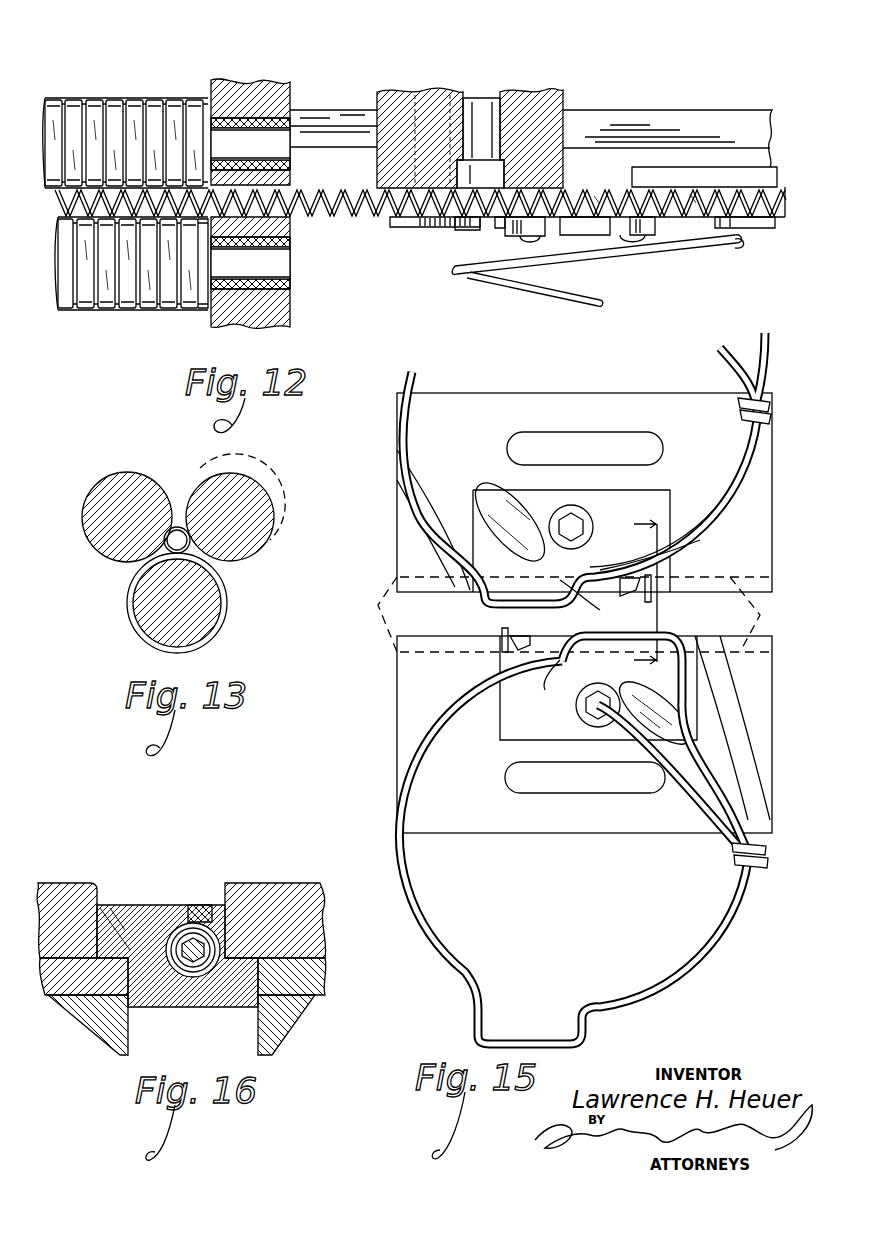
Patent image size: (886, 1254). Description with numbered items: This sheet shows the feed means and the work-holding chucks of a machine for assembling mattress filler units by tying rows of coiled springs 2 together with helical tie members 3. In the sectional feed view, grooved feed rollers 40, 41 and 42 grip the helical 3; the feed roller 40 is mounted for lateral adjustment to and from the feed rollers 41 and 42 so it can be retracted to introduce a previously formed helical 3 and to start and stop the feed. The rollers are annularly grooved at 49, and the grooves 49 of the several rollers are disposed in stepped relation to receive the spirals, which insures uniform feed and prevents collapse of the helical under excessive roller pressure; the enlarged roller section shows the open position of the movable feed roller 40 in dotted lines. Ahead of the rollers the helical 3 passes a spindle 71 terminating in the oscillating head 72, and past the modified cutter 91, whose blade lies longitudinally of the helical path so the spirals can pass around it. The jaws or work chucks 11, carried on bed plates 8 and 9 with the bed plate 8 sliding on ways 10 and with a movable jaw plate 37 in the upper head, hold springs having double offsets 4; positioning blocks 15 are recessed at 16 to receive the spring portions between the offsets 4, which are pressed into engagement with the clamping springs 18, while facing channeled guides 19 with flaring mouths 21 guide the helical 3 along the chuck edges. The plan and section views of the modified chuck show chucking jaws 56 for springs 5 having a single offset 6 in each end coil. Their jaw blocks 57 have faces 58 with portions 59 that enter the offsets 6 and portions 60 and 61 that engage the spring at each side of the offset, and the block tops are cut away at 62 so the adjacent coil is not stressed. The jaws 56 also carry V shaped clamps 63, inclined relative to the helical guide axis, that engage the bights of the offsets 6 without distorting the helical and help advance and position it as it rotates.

In FIG. 12, the coiled springs 2 is at (666, 252).
In FIG. 12, the helical tie member 3 is at (320, 190).
In FIG. 13, the helical tie member 3 is at (177, 530).
In FIG. 16, the helical tie member 3 is at (205, 925).
In FIG. 12, the double offsets 4 is at (597, 196).
In FIG. 15, the springs 5 is at (710, 522).
In FIG. 15, the offset 6 is at (493, 598).
In FIG. 16, the offset 6 is at (208, 962).
In FIG. 16, the bed plate 8 is at (292, 1020).
In FIG. 16, the bed plate 9 is at (105, 1020).
In FIG. 12, the ways 10 is at (115, 100).
In FIG. 12, the jaws or work chucks 11 is at (772, 180).
In FIG. 12, the positioning blocks 15 is at (520, 236).
In FIG. 12, the recess 16 is at (617, 222).
In FIG. 15, the recess 16 is at (631, 593).
In FIG. 12, the clamping springs 18 is at (578, 225).
In FIG. 12, the channeled guides 19 is at (463, 222).
In FIG. 15, the channeled guides 19 is at (758, 614).
In FIG. 15, the flaring mouths 21 is at (372, 614).
In FIG. 12, the movable jaw plate 37 is at (743, 122).
In FIG. 13, the feed roller 40 is at (258, 492).
In FIG. 12, the feed roller 41 is at (153, 105).
In FIG. 13, the feed roller 41 is at (121, 481).
In FIG. 12, the feed roller 42 is at (160, 303).
In FIG. 13, the feed roller 42 is at (142, 614).
In FIG. 12, the annular grooves 49 is at (184, 108).
In FIG. 13, the annular grooves 49 is at (226, 622).
In FIG. 15, the chucking jaws 56 is at (470, 400).
In FIG. 16, the chucking jaws 56 is at (50, 976).
In FIG. 15, the jaw blocks 57 is at (525, 492).
In FIG. 16, the jaw blocks 57 is at (62, 895).
In FIG. 15, the faces 58 is at (578, 575).
In FIG. 15, the portions 59 is at (575, 588).
In FIG. 15, the portions 60 is at (498, 555).
In FIG. 15, the portions 61 is at (615, 565).
In FIG. 15, the recesses 62 is at (485, 500).
In FIG. 15, the V shaped clamps 63 is at (631, 598).
In FIG. 16, the V shaped clamps 63 is at (196, 912).
In FIG. 12, the spindle 71 is at (478, 103).
In FIG. 12, the oscillating head 72 is at (505, 230).
In FIG. 12, the cutter 91 is at (447, 216).